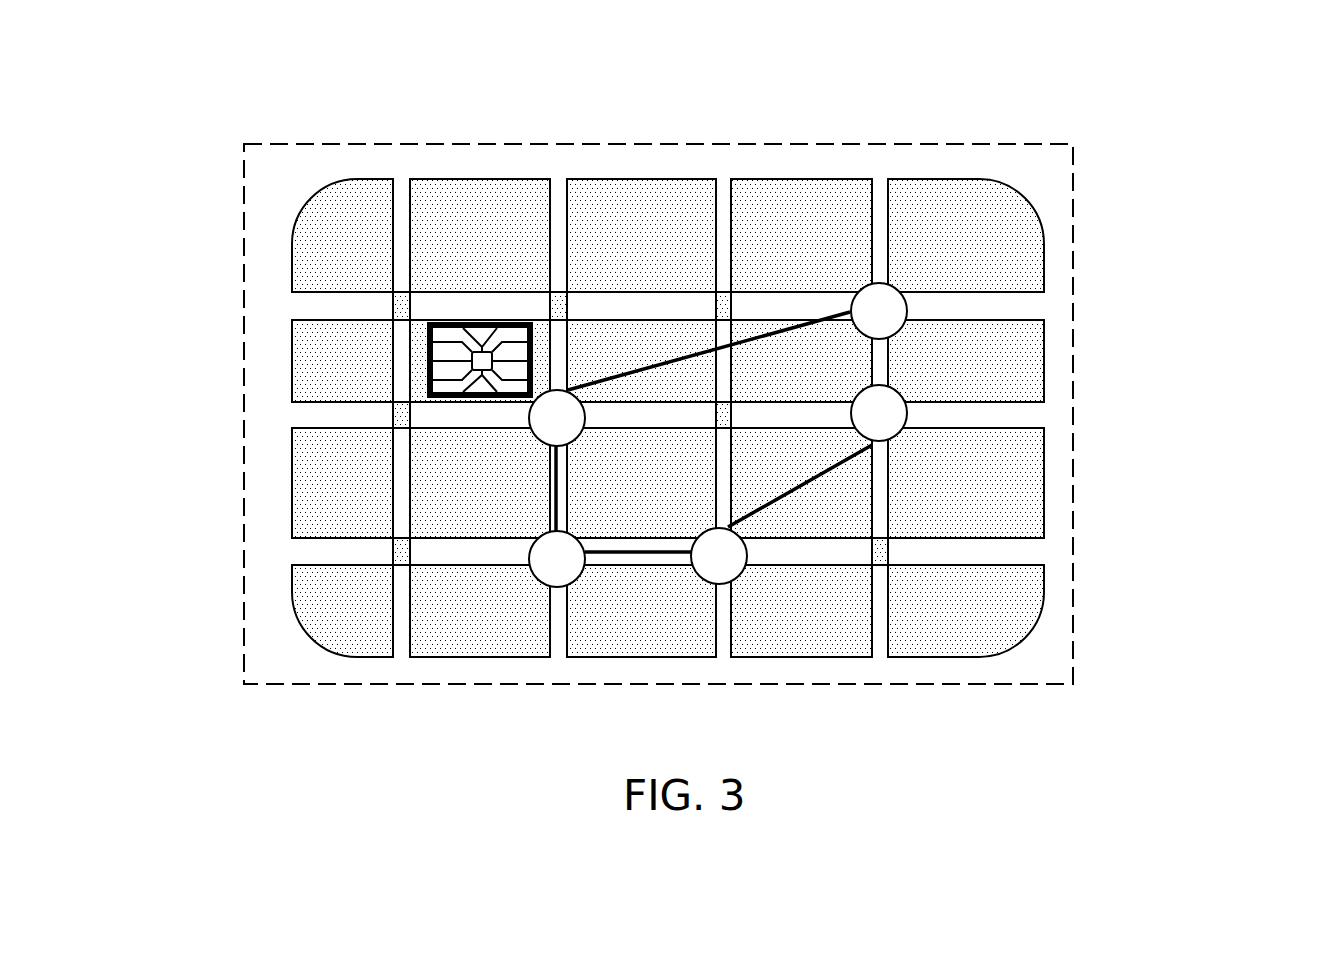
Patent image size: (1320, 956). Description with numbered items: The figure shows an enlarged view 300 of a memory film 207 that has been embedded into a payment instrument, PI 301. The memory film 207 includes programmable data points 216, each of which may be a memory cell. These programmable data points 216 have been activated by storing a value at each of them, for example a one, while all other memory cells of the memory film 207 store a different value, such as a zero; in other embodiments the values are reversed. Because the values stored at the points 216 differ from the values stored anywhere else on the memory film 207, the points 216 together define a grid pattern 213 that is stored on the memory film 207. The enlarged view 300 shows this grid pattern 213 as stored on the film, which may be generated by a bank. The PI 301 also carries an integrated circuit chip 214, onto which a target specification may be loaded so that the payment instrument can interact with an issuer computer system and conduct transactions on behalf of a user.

The enlarged view 300 is at (701, 407).
The PI 301 is at (845, 144).
The memory film 207 is at (658, 178).
The grid pattern 213 is at (797, 492).
The integrated circuit chip 214 is at (426, 362).
The programmable data points 216 is at (908, 305).